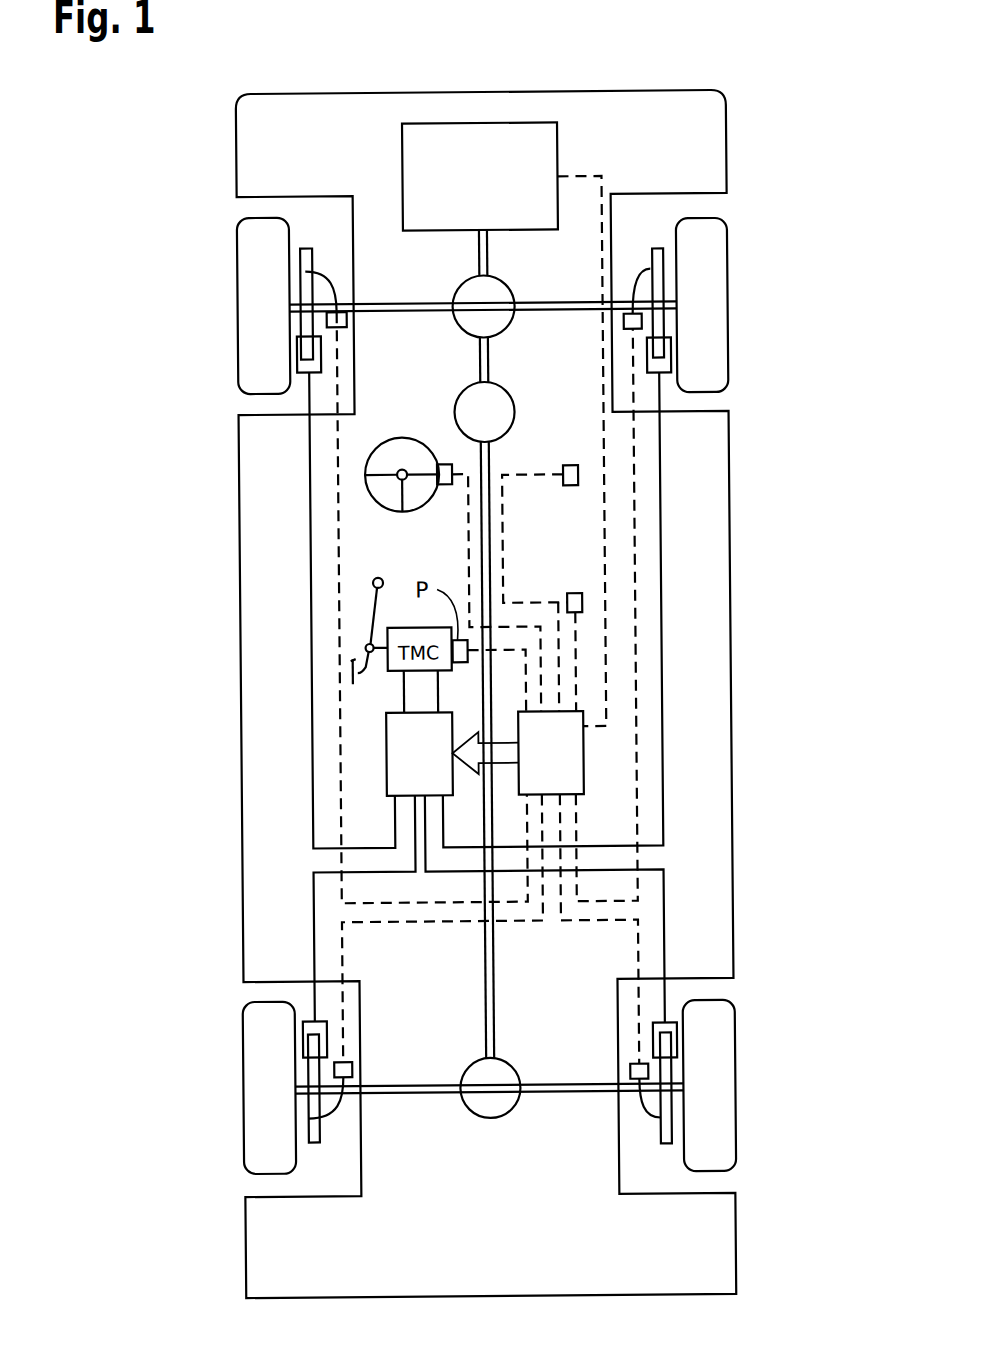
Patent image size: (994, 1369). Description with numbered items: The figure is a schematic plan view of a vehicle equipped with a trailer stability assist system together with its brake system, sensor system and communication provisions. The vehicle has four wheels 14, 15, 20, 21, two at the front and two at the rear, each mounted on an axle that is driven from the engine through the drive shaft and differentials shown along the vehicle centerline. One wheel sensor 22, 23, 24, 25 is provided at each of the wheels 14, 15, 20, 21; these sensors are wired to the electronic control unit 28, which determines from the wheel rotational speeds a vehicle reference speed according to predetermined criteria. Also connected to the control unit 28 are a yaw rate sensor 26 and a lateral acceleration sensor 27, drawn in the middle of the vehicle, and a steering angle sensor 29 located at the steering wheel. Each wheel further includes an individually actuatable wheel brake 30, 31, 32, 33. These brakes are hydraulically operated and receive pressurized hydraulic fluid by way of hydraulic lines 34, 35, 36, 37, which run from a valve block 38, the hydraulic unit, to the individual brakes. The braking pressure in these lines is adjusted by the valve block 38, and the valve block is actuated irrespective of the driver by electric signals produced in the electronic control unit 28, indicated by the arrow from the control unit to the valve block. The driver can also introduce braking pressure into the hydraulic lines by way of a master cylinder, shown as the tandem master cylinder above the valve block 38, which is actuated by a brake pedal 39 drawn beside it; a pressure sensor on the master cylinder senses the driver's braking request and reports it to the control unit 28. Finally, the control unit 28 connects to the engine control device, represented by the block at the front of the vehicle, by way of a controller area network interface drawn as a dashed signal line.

The wheel 14 is at (264, 1146).
The wheel 15 is at (713, 1150).
The wheel 20 is at (259, 238).
The wheel 21 is at (714, 240).
The wheel sensor 22 is at (657, 1119).
The wheel sensor 23 is at (305, 1117).
The wheel sensor 24 is at (309, 270).
The wheel sensor 25 is at (654, 270).
The yaw rate sensor 26 is at (584, 604).
The lateral acceleration sensor 27 is at (582, 476).
The electronic control unit 28 is at (583, 753).
The steering angle sensor 29 is at (447, 464).
The wheel brake 30 is at (300, 1037).
The wheel brake 31 is at (674, 1040).
The wheel brake 32 is at (300, 352).
The wheel brake 33 is at (674, 353).
The hydraulic line 34 is at (312, 816).
The hydraulic line 35 is at (312, 903).
The hydraulic line 36 is at (662, 834).
The hydraulic line 37 is at (662, 903).
The valve block 38 is at (386, 744).
The brake pedal 39 is at (369, 607).